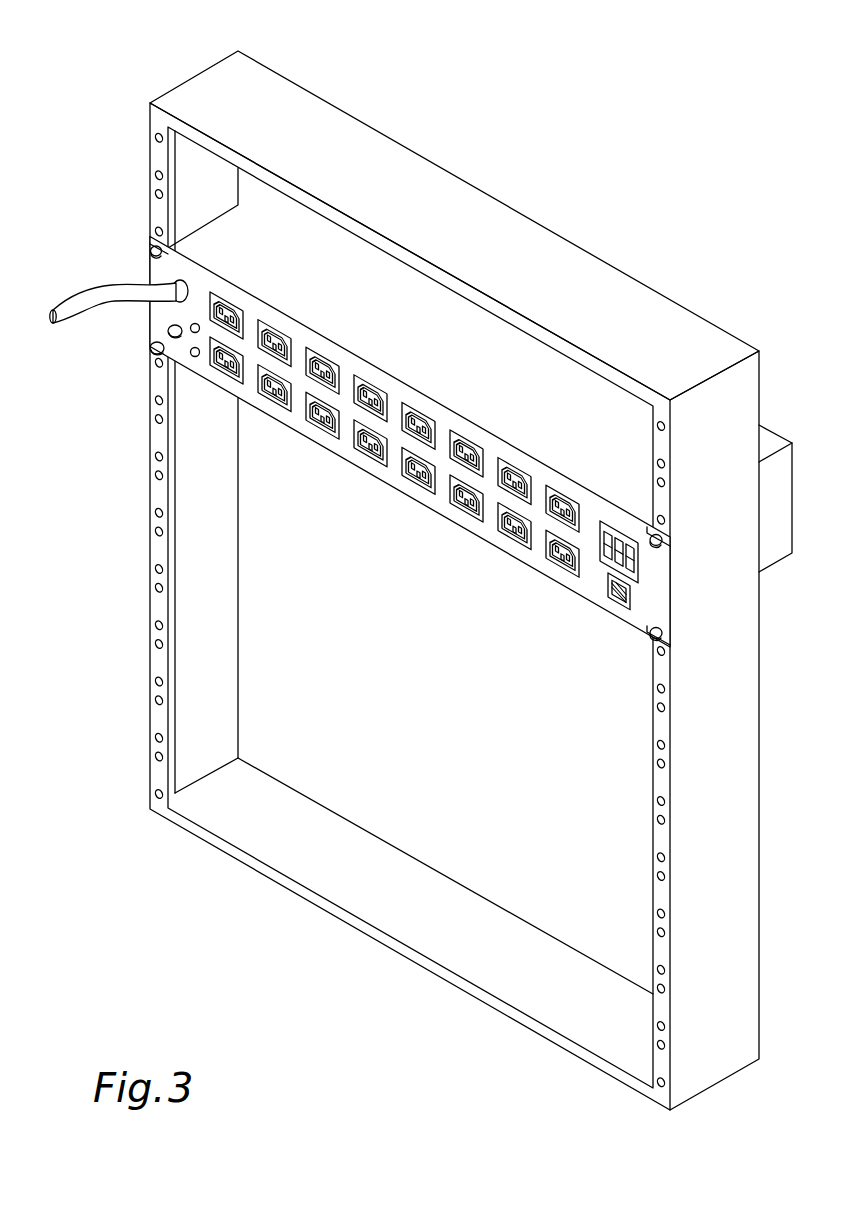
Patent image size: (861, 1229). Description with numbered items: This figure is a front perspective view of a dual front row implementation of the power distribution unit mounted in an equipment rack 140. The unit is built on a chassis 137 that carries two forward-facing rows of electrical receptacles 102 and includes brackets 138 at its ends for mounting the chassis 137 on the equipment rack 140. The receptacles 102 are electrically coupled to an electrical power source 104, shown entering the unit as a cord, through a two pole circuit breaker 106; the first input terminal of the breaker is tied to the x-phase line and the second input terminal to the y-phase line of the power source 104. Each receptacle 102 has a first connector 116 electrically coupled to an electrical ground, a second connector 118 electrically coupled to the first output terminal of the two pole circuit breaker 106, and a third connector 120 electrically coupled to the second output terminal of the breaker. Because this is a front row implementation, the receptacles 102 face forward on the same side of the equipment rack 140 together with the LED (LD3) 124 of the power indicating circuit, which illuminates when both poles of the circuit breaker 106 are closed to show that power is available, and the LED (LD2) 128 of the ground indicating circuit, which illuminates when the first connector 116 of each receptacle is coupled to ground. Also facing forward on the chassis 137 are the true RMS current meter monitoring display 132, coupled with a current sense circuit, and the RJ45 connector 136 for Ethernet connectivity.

The electrical receptacles 102 is at (322, 345).
The electrical power source 104 is at (58, 303).
The two pole circuit breaker 106 is at (167, 330).
The first connector 116 is at (485, 462).
The second connector 118 is at (463, 447).
The third connector 120 is at (478, 450).
The LED (LD3) 124 is at (195, 357).
The LED (LD2) 128 is at (195, 323).
The true RMS current meter monitoring display 132 is at (620, 527).
The RJ45 connector 136 is at (606, 592).
The chassis 137 is at (437, 320).
The brackets 138 is at (150, 243).
The equipment rack 140 is at (347, 132).